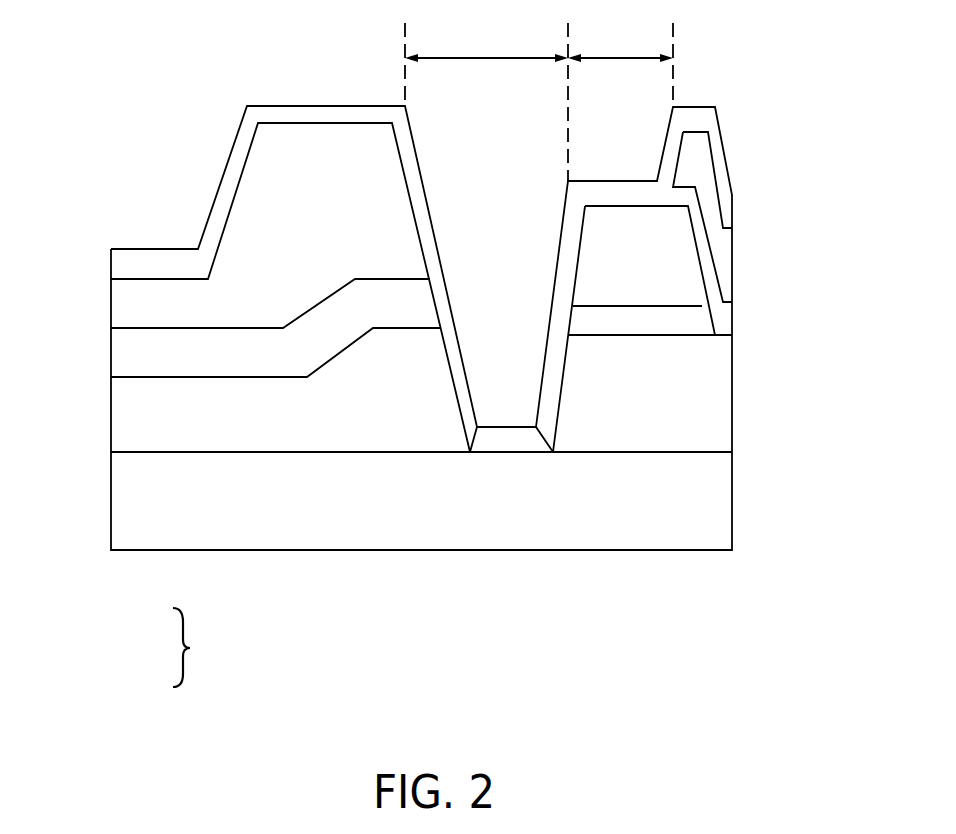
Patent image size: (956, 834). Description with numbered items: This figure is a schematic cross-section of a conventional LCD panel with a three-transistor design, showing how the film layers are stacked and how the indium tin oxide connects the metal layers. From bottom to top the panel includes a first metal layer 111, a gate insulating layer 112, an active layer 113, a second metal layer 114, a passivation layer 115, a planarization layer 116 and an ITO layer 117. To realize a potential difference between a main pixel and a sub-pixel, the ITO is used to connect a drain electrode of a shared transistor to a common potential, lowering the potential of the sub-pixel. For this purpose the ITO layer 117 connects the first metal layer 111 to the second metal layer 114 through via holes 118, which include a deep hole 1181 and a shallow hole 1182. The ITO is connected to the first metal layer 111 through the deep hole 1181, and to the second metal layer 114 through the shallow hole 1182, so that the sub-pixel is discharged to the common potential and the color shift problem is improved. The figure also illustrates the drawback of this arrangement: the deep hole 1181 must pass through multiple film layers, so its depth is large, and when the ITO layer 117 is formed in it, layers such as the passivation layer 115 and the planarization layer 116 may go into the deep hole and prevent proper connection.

The first metal layer 111 is at (133, 498).
The gate insulating layer 112 is at (128, 425).
The active layer 113 is at (697, 330).
The second metal layer 114 is at (690, 263).
The passivation layer 115 is at (128, 352).
The planarization layer 116 is at (130, 298).
The ITO layer 117 is at (128, 265).
The via holes 118 is at (203, 647).
The deep hole 1181 is at (340, 329).
The shallow hole 1182 is at (393, 357).